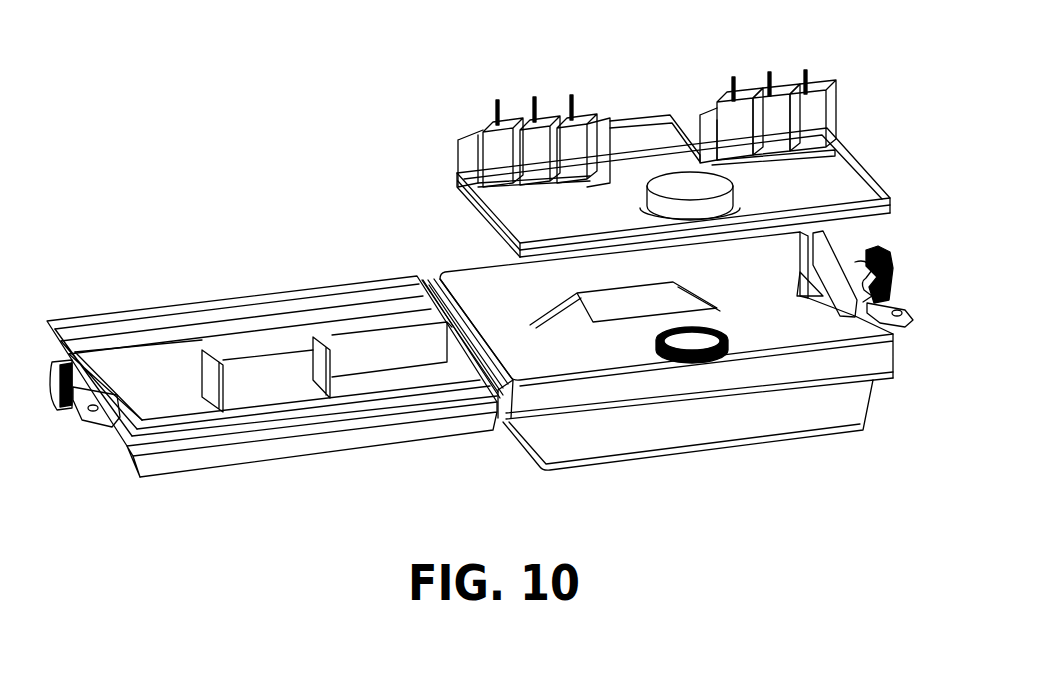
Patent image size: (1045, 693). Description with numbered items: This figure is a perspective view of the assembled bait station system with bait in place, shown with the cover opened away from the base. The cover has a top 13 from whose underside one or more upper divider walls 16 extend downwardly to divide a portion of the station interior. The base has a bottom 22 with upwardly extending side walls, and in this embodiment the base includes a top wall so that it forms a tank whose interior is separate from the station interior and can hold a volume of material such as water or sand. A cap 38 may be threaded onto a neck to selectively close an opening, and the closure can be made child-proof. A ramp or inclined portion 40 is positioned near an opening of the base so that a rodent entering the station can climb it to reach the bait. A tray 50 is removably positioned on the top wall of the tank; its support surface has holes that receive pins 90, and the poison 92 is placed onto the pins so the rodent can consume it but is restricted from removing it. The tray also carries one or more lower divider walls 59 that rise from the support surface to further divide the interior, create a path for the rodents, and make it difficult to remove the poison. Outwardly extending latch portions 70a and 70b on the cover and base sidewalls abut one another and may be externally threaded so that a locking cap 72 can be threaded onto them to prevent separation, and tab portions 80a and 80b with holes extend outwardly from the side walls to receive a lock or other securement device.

The top 13 is at (253, 447).
The upper divider walls 16 is at (160, 370).
The bottom 22 is at (622, 462).
The cap 38 is at (697, 345).
The ramp or inclined portion 40 is at (570, 322).
The tray 50 is at (838, 184).
The lower divider walls 59 is at (612, 130).
The latch portion 70a is at (57, 395).
The latch portion 70b is at (858, 262).
The locking cap 72 is at (893, 272).
The tab portion 80a is at (99, 418).
The tab portion 80b is at (907, 323).
The pins 90 is at (733, 78).
The poison 92 is at (545, 118).